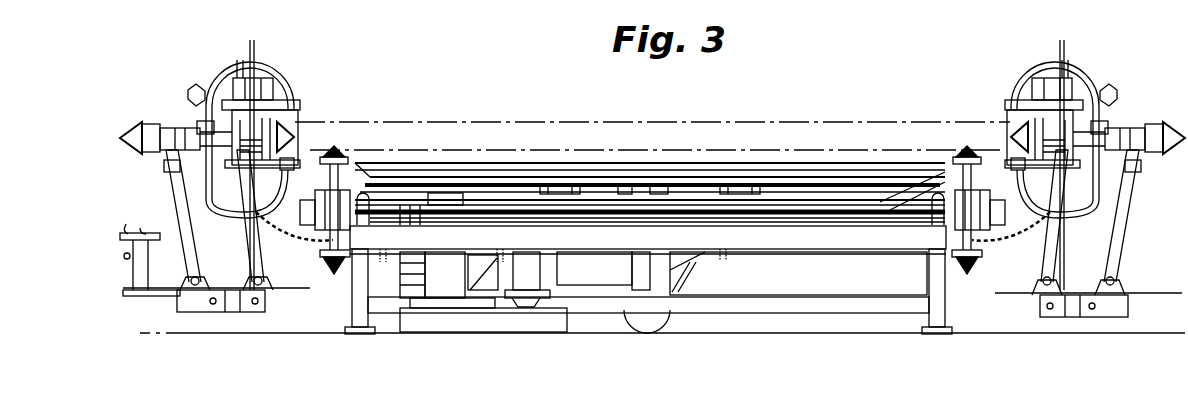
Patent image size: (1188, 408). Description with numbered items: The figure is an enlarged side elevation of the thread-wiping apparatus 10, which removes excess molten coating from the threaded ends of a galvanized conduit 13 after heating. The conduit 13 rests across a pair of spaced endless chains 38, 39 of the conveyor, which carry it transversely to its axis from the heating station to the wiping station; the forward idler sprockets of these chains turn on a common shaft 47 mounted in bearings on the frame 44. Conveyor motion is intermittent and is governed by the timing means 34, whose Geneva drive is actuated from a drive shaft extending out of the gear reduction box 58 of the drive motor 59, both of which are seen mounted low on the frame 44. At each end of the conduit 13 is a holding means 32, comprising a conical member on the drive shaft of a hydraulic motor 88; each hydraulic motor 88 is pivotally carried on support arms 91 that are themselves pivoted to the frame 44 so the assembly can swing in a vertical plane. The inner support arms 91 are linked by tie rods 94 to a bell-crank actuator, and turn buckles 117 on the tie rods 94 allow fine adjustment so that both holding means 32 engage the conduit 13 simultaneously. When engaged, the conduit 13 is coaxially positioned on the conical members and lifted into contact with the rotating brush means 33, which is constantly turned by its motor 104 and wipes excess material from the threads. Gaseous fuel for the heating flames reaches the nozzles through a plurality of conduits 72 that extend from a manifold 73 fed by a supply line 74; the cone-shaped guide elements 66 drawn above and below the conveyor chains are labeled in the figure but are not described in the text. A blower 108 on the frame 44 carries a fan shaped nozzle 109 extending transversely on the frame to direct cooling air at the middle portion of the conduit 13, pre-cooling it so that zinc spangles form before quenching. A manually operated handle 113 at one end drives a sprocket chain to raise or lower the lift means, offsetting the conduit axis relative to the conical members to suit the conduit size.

The thread-wiping apparatus 10 is at (438, 99).
The conduit 13 is at (531, 120).
The holding means 32 is at (297, 121).
The rotating brush means 33 is at (292, 86).
The timing means 34 is at (452, 300).
The endless chain 38 is at (320, 253).
The endless chain 39 is at (985, 256).
The frame 44 is at (932, 318).
The common shaft 47 is at (556, 226).
The gear reduction box 58 is at (537, 278).
The drive motor 59 is at (610, 280).
The guide cone 66 is at (337, 150).
The conduit 72 is at (1068, 52).
The manifold 73 is at (204, 122).
The supply line 74 is at (165, 167).
The hydraulic motor 88 is at (172, 125).
The support arm 91 is at (250, 230).
The tie rod 94 is at (455, 170).
The motor 104 is at (195, 90).
The blower 108 is at (681, 291).
The fan shaped nozzle 109 is at (790, 172).
The manually operated handle 113 is at (125, 232).
The turn buckle 117 is at (558, 183).